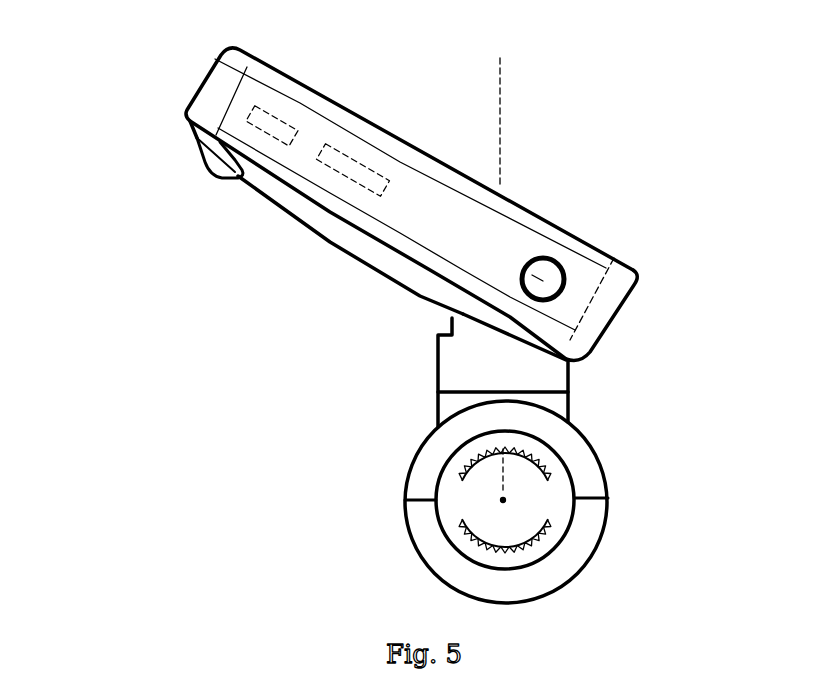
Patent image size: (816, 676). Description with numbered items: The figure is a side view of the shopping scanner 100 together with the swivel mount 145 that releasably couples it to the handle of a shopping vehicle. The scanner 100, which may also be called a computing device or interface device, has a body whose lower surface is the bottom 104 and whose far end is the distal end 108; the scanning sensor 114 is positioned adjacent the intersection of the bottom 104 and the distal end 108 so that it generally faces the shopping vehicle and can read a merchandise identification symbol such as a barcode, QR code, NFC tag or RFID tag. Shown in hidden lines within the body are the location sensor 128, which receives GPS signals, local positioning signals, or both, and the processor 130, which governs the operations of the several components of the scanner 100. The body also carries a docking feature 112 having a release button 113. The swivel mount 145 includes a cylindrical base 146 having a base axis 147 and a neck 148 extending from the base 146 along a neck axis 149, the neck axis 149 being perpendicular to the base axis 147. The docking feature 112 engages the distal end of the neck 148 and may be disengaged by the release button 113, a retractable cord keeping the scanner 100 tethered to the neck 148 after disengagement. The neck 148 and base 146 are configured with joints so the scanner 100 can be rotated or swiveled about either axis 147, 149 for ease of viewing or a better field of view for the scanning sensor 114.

The shopping scanner 100 is at (357, 127).
The bottom 104 is at (307, 230).
The distal end 108 is at (200, 78).
The docking feature 112 is at (457, 305).
The release button 113 is at (524, 265).
The scanning sensor 114 is at (208, 165).
The location sensor 128 is at (275, 111).
The processor 130 is at (378, 170).
The swivel mount 145 is at (570, 398).
The cylindrical base 146 is at (412, 487).
The base axis 147 is at (507, 500).
The neck 148 is at (437, 380).
The neck axis 149 is at (510, 468).